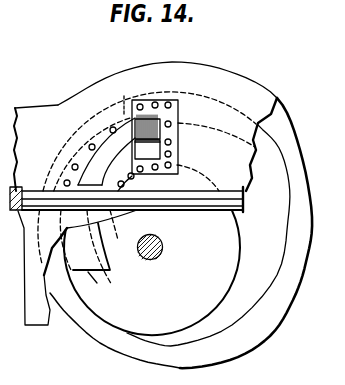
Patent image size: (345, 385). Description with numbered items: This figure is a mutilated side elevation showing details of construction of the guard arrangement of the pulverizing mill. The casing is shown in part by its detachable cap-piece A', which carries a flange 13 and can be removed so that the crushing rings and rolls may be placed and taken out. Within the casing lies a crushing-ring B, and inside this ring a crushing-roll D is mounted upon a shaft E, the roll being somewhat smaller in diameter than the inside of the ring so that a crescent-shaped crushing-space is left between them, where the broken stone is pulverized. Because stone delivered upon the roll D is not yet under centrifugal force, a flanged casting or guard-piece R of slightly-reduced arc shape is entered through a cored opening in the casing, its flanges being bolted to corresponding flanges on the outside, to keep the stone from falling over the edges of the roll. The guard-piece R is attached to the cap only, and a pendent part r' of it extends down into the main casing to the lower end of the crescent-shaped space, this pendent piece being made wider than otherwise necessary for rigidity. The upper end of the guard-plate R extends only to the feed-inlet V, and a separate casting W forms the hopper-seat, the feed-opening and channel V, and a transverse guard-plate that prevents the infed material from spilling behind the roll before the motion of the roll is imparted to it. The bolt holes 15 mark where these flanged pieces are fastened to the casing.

The flange 13 is at (113, 190).
The bolt holes 15 is at (156, 102).
The feed-inlet V is at (135, 118).
The separate casting W is at (178, 107).
The cap-piece A' is at (145, 126).
The flanged casting R is at (106, 151).
The pendent part r' is at (102, 247).
The shaft E is at (150, 248).
The crushing-roll D is at (152, 272).
The crushing-ring B is at (181, 233).